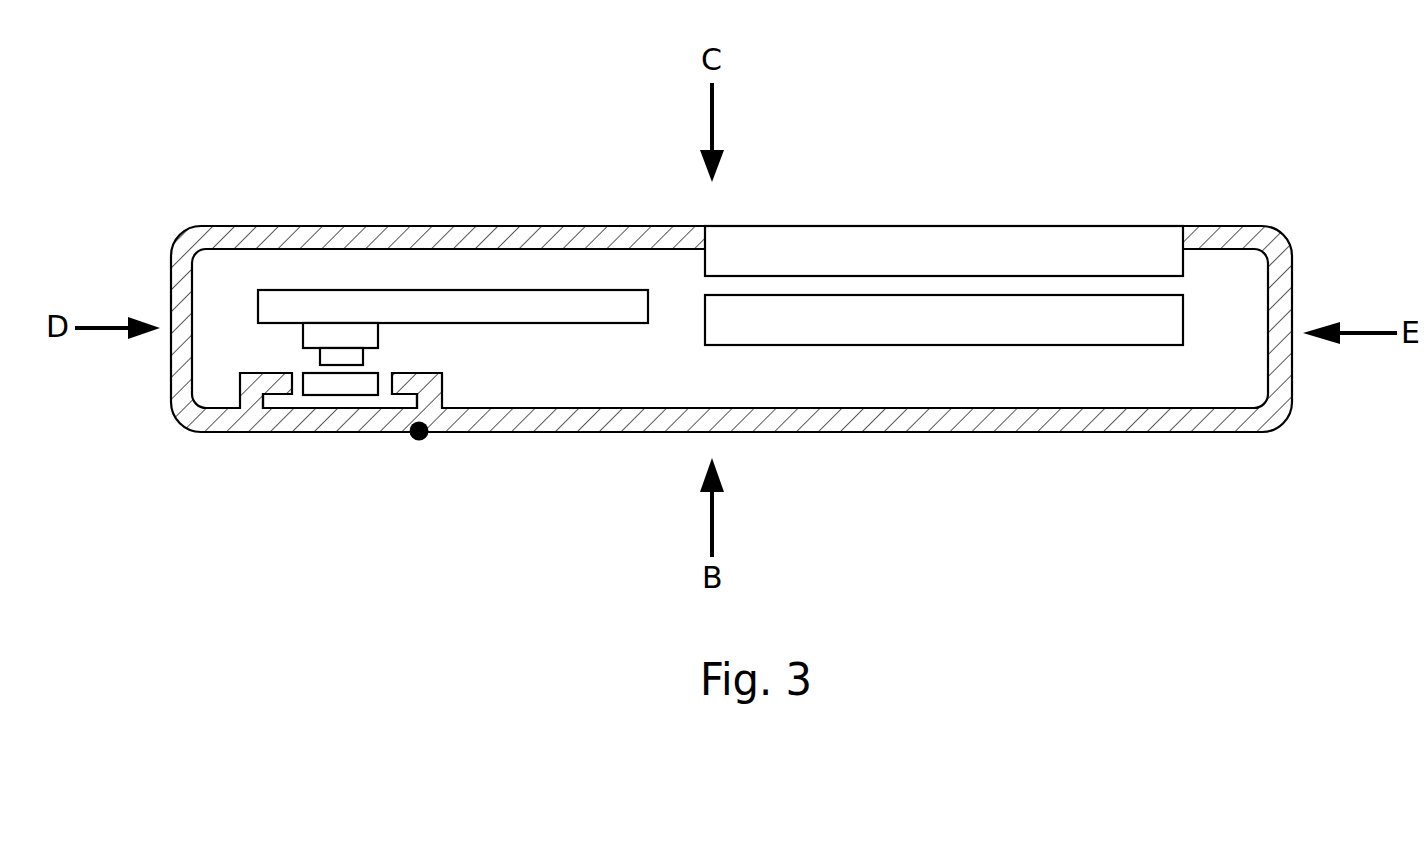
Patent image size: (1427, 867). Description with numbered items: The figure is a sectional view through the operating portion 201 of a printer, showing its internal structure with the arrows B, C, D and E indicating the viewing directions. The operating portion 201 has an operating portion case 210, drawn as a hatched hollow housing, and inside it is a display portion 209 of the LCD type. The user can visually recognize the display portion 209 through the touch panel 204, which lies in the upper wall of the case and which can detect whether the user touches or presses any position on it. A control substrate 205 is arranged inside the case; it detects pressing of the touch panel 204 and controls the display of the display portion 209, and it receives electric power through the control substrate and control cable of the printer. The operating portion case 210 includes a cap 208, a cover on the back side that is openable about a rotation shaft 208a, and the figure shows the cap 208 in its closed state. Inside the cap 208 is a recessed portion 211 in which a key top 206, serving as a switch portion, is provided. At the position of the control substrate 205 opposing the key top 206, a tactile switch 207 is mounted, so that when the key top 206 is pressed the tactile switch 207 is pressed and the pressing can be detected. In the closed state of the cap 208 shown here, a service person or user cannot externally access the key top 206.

The operating portion 201 is at (731, 299).
The touch panel 204 is at (1015, 225).
The control substrate 205 is at (595, 323).
The key top 206 is at (305, 373).
The tactile switch 207 is at (365, 355).
The cap 208 is at (347, 420).
The rotation shaft 208a is at (419, 431).
The display portion 209 is at (877, 345).
The operating portion case 210 is at (1197, 433).
The recessed portion 211 is at (283, 400).